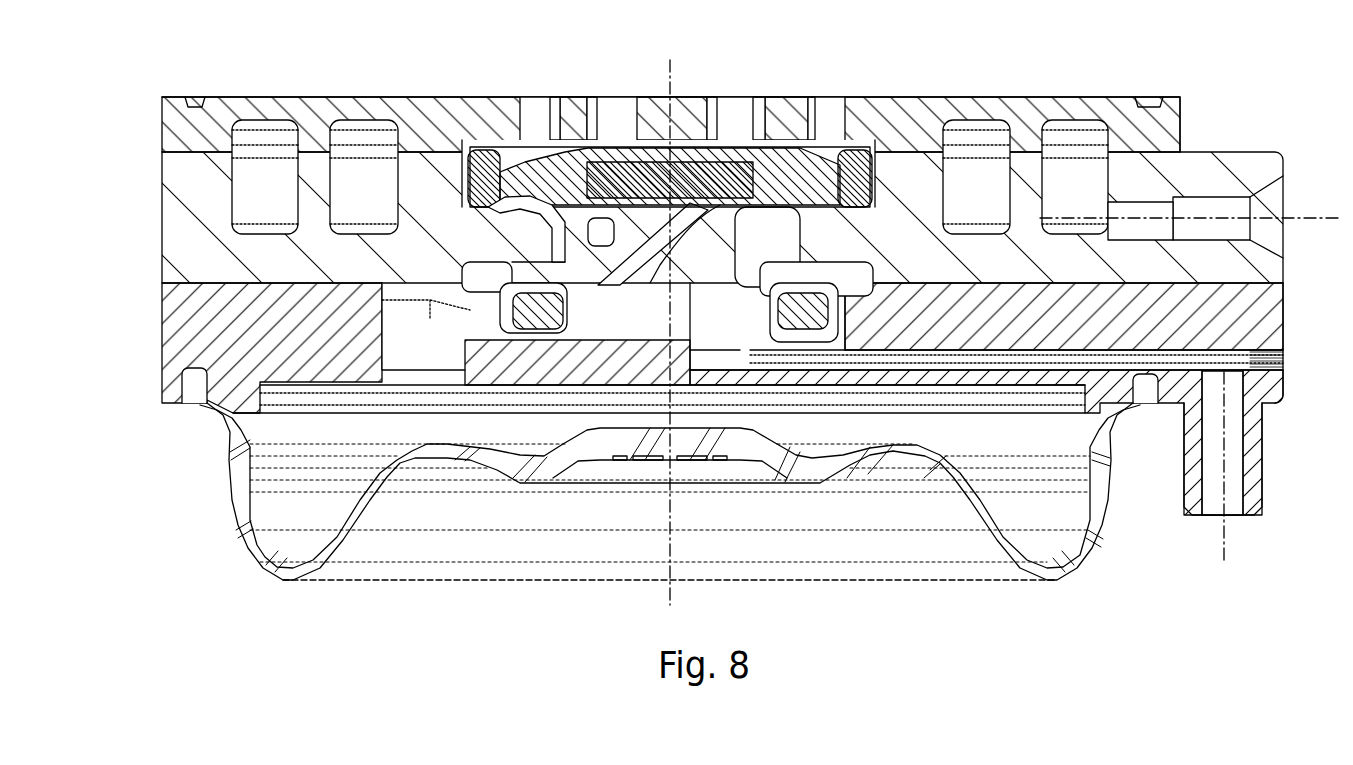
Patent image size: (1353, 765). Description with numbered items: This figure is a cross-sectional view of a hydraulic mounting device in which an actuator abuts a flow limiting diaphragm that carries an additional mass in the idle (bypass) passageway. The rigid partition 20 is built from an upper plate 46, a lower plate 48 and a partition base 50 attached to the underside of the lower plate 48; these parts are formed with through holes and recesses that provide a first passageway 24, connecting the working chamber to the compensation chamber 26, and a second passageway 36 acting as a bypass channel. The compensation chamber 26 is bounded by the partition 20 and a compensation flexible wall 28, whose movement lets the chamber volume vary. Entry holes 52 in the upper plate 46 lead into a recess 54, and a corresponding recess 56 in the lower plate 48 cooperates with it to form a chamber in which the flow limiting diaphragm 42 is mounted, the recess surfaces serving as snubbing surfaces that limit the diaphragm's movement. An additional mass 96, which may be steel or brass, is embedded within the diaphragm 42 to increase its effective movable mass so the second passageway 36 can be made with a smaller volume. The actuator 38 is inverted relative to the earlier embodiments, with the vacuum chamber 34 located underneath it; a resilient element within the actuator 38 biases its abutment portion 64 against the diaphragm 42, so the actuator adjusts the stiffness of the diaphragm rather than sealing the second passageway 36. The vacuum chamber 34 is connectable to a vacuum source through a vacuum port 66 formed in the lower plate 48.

The partition 20 is at (1000, 97).
The first passageway 24 is at (670, 177).
The compensation chamber 26 is at (670, 502).
The compensation flexible wall 28 is at (1080, 556).
The vacuum chamber 34 is at (767, 326).
The second passageway 36 is at (426, 326).
The actuator 38 is at (607, 273).
The flow limiting diaphragm 42 is at (557, 180).
The upper plate 46 is at (210, 138).
The lower plate 48 is at (200, 245).
The partition base 50 is at (200, 333).
The entry holes 52 is at (808, 113).
The recess 54 is at (590, 138).
The recess 56 is at (540, 205).
The abutment portion 64 is at (703, 233).
The vacuum port 66 is at (1237, 470).
The additional mass 96 is at (622, 180).